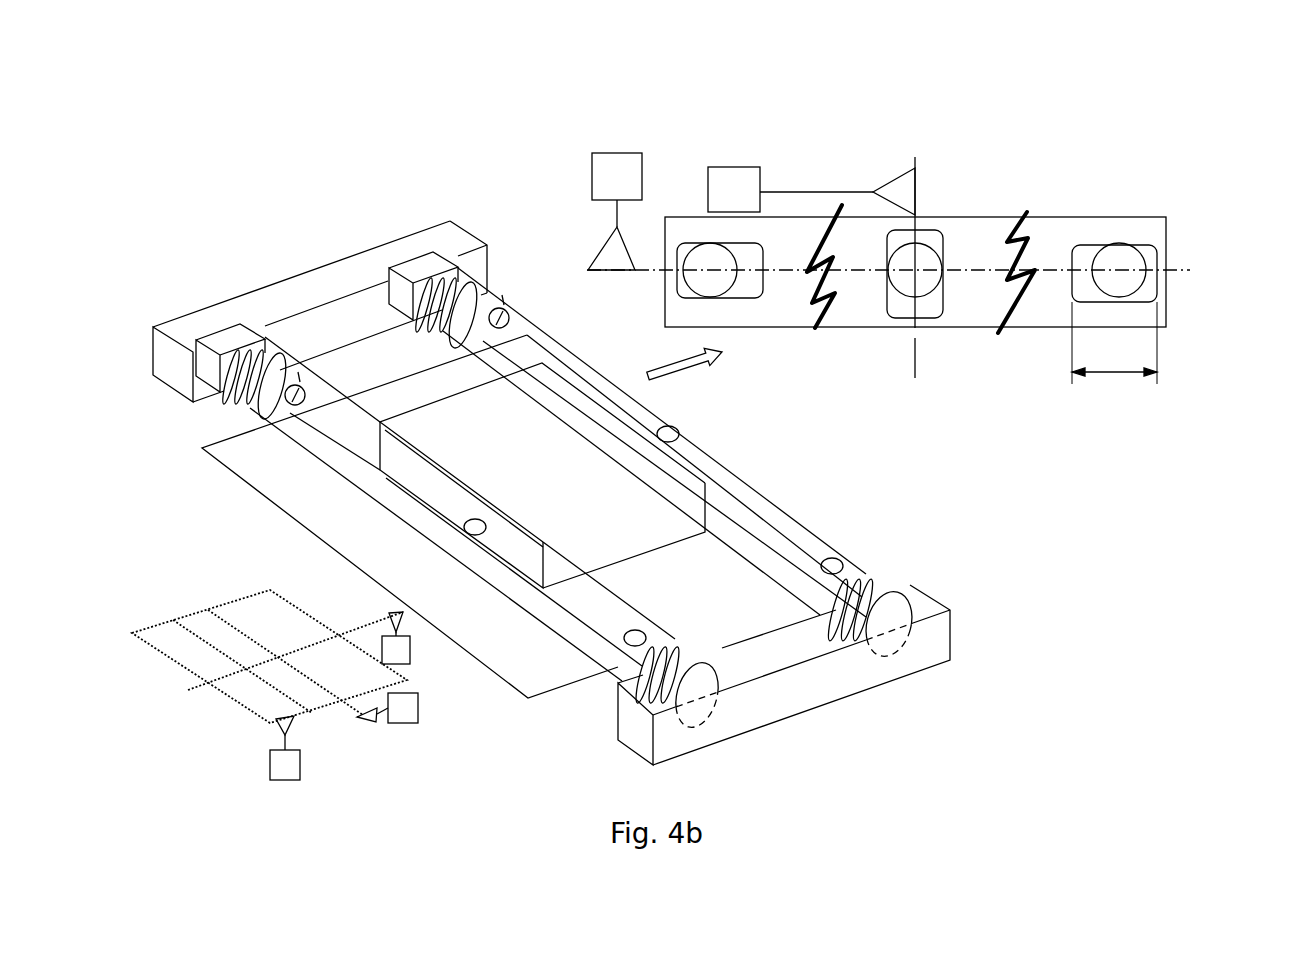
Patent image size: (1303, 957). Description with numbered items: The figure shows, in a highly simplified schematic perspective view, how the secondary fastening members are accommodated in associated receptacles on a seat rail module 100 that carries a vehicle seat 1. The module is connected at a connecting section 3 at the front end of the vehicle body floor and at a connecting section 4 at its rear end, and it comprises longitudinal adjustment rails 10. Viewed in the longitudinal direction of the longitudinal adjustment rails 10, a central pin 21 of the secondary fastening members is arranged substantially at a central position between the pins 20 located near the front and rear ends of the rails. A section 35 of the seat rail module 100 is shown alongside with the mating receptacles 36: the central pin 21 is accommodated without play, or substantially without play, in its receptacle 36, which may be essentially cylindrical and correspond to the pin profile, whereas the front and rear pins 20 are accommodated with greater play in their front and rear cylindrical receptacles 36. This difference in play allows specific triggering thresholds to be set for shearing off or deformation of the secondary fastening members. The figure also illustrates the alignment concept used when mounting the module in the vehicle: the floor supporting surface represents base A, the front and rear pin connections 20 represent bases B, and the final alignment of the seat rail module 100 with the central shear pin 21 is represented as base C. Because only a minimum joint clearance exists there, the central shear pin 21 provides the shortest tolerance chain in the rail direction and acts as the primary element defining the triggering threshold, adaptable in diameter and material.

The seat rail module 100 is at (178, 97).
The vehicle seat 1 is at (566, 385).
The connecting section at front end of floor 3 is at (299, 288).
The connecting section at rear end of seat rail module 4 is at (938, 649).
The longitudinal adjustment rail 10 is at (768, 508).
The secondary fastening member 20 is at (507, 313).
The central secondary fastening member 21 is at (928, 268).
The section of seat rail module 35 is at (1085, 218).
The slot hole 36 is at (757, 253).